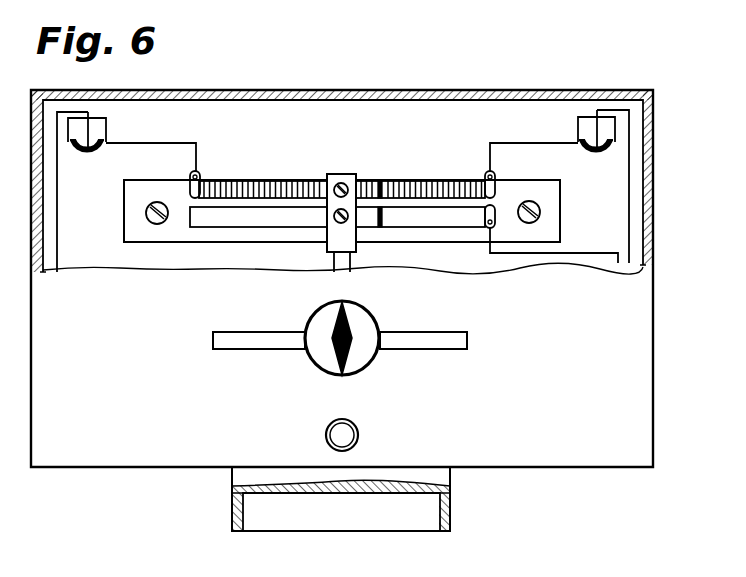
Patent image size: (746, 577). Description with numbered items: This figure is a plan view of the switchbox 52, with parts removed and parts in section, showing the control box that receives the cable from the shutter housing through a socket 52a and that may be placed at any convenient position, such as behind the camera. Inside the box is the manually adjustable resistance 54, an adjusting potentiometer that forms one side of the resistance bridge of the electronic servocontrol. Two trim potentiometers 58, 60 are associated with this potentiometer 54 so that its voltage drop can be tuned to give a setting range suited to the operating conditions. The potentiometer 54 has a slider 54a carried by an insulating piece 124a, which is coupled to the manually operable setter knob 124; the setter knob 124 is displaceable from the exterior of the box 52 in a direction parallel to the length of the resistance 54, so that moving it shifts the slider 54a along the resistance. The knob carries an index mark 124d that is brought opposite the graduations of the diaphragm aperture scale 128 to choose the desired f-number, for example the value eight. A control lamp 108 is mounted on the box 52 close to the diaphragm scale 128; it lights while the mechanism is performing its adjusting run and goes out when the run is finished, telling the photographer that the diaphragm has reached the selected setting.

The switchbox 52 is at (653, 200).
The socket 52a is at (450, 508).
The manually adjustable resistance 54 is at (238, 184).
The slider 54a is at (381, 214).
The trim potentiometer 58 is at (104, 127).
The trim potentiometer 60 is at (578, 125).
The control lamp 108 is at (358, 437).
The setter knob 124 is at (367, 328).
The insulating piece 124a is at (335, 174).
The pointer 124d is at (336, 322).
The diaphragm aperture scale 128 is at (465, 393).